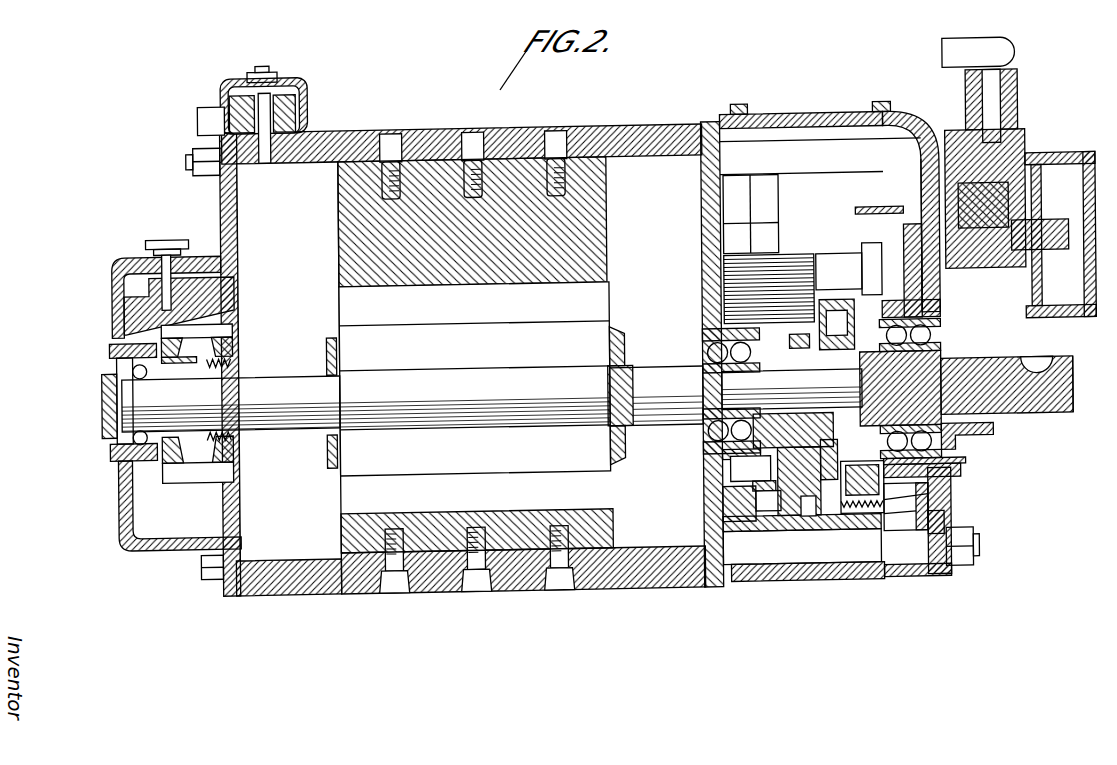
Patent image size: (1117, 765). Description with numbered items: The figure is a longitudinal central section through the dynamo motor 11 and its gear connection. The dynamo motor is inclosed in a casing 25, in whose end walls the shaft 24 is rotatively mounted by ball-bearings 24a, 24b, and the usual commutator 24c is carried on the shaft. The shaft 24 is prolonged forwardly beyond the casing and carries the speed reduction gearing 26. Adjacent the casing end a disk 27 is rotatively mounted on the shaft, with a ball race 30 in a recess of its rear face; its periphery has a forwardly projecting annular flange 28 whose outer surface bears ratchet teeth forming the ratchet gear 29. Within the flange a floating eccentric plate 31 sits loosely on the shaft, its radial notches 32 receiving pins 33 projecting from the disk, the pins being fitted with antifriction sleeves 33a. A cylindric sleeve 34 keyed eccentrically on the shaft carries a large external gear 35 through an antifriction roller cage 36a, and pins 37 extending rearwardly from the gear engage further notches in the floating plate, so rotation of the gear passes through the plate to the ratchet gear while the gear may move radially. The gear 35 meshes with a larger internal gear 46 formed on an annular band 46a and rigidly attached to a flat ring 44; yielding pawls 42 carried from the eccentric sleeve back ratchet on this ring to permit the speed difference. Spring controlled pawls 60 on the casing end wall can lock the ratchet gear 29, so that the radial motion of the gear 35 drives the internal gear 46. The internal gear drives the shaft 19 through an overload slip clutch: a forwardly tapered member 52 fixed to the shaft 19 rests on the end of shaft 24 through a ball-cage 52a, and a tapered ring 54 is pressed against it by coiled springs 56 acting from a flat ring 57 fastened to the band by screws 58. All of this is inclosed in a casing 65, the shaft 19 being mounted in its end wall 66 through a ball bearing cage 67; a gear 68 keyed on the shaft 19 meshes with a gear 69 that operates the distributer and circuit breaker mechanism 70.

The dynamo motor 11 is at (333, 126).
The shaft 19 is at (1047, 412).
The shaft 24 is at (638, 381).
The ball-bearing 24a is at (116, 444).
The ball-bearing 24b is at (697, 342).
The commutator 24c is at (190, 469).
The casing 25 is at (239, 227).
The speed reduction gearing 26 is at (816, 257).
The disk 27 is at (740, 495).
The annular flange 28 is at (745, 521).
The ratchet gear 29 is at (781, 280).
The ball race 30 is at (703, 338).
The floating eccentric plate 31 is at (722, 459).
The notches 32 is at (740, 511).
The pins 33 is at (740, 465).
The antifriction sleeves 33a is at (735, 490).
The cylindric sleeve 34 is at (793, 424).
The gear 35 is at (797, 486).
The antifriction roller cage 36a is at (845, 263).
The pins 37 is at (875, 262).
The yielding pawls 42 is at (838, 344).
The flat ring 44 is at (838, 524).
The internal gear 46 is at (800, 349).
The annular band 46a is at (800, 486).
The forwardly tapered member 52 is at (987, 369).
The ball-cage 52a is at (905, 325).
The ring 54 is at (960, 468).
The coiled springs 56 is at (943, 491).
The flat ring 57 is at (943, 527).
The screws 58 is at (940, 508).
The spring controlled pawls 60 is at (773, 195).
The casing 65 is at (902, 574).
The end wall 66 is at (930, 169).
The ball bearing cage 67 is at (963, 459).
The gear 68 is at (978, 441).
The gear 69 is at (1005, 141).
The distributer and circuit breaker mechanism 70 is at (1030, 160).